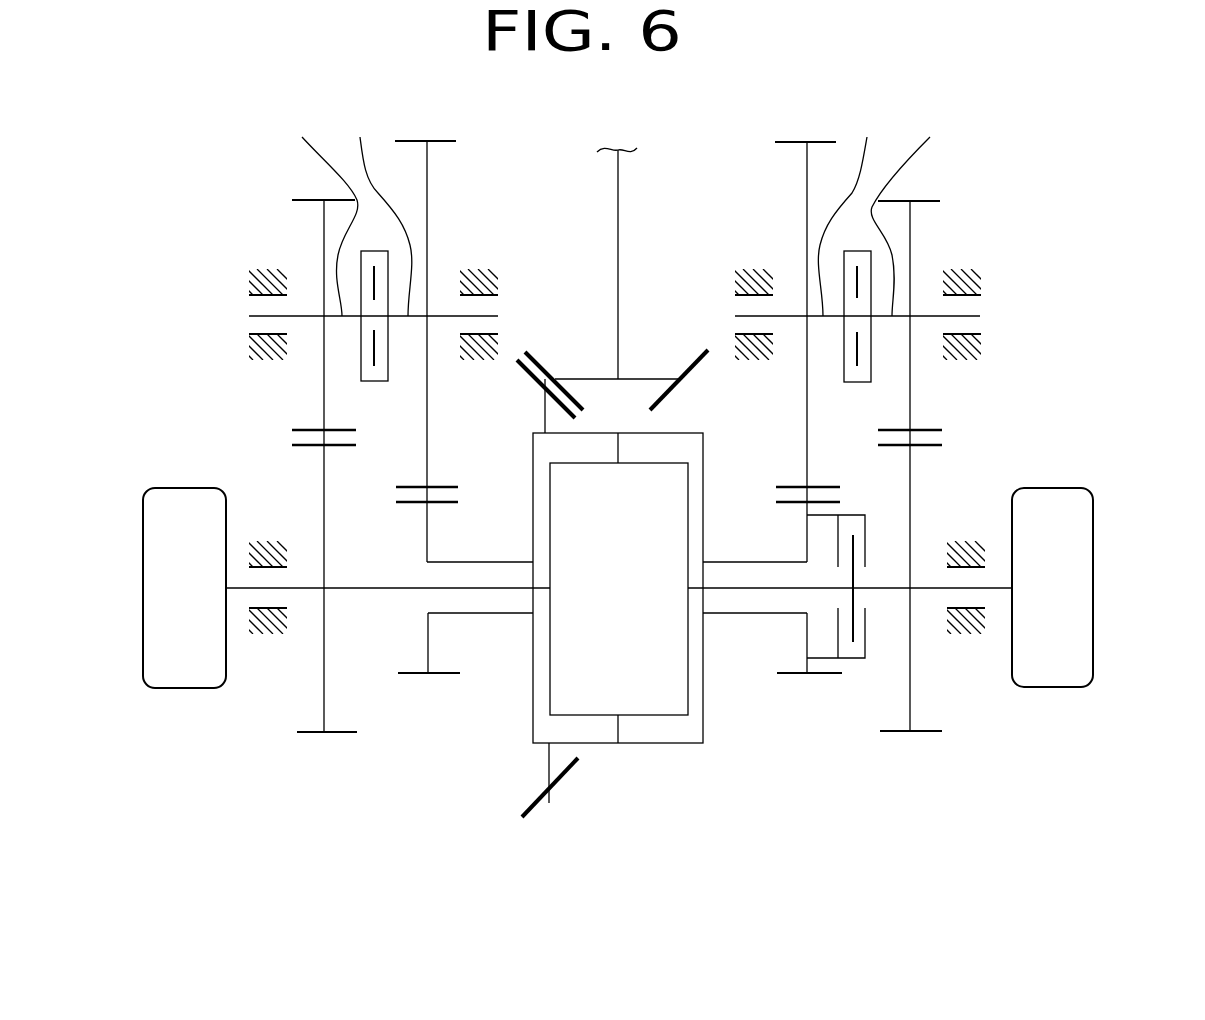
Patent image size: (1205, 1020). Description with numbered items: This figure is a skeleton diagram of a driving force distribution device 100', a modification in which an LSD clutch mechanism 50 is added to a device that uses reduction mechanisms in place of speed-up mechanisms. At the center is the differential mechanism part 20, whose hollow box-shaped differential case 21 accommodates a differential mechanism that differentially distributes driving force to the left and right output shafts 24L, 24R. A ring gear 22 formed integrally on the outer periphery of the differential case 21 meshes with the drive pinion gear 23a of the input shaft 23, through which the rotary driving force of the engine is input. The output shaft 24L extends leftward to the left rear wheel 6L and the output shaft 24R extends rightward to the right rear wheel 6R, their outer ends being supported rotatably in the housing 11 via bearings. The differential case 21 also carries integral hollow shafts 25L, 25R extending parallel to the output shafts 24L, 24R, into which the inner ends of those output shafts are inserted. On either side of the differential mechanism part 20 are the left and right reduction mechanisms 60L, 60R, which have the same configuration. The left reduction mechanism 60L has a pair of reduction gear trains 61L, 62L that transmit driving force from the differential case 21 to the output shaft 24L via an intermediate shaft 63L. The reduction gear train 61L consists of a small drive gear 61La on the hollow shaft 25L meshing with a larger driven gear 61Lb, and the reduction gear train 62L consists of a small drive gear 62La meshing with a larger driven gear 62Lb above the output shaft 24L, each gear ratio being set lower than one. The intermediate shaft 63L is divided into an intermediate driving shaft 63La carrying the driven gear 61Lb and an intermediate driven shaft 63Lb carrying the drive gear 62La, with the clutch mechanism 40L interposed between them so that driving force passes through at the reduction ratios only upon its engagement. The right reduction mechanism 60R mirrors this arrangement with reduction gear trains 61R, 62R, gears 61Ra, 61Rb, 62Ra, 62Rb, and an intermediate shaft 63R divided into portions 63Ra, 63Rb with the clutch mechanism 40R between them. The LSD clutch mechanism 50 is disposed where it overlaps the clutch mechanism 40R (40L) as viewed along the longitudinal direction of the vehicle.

The driving force distribution device 100' is at (1135, 127).
The left rear wheel 6L is at (185, 488).
The right rear wheel 6R is at (1050, 488).
The housing 11 is at (273, 270).
The differential mechanism part 20 is at (580, 633).
The differential case 21 is at (533, 468).
The ring gear 22 is at (538, 805).
The input shaft 23 is at (624, 290).
The drive pinion gear 23a is at (700, 360).
The left output shaft 24L is at (377, 590).
The right output shaft 24R is at (887, 590).
The left hollow shaft 25L is at (482, 615).
The right hollow shaft 25R is at (760, 615).
The left clutch mechanism 40L is at (375, 389).
The right clutch mechanism 40R is at (835, 384).
The LSD clutch mechanism 50 is at (870, 557).
The left reduction mechanism 60L is at (351, 464).
The right reduction mechanism 60R is at (881, 464).
The reduction gear train 61L is at (449, 453).
The drive gear 61La is at (415, 693).
The driven gear 61Lb is at (443, 140).
The reduction gear train 62L is at (287, 492).
The drive gear 62La is at (303, 197).
The driven gear 62Lb is at (308, 735).
The intermediate shaft 63L is at (339, 272).
The intermediate driving shaft 63La is at (384, 213).
The intermediate driven shaft 63Lb is at (317, 213).
The right first gear pair 61R is at (781, 451).
The right first gear (output side) 61Ra is at (825, 695).
The right first gear (input side) 61Rb is at (787, 140).
The right second gear pair 62R is at (950, 491).
The right second gear (input side) 62Ra is at (928, 197).
The right second gear (output side) 62Rb is at (930, 735).
The right intermediate gear pair 63R is at (889, 262).
The right intermediate gear a 63Ra is at (846, 213).
The right intermediate gear b 63Rb is at (915, 213).